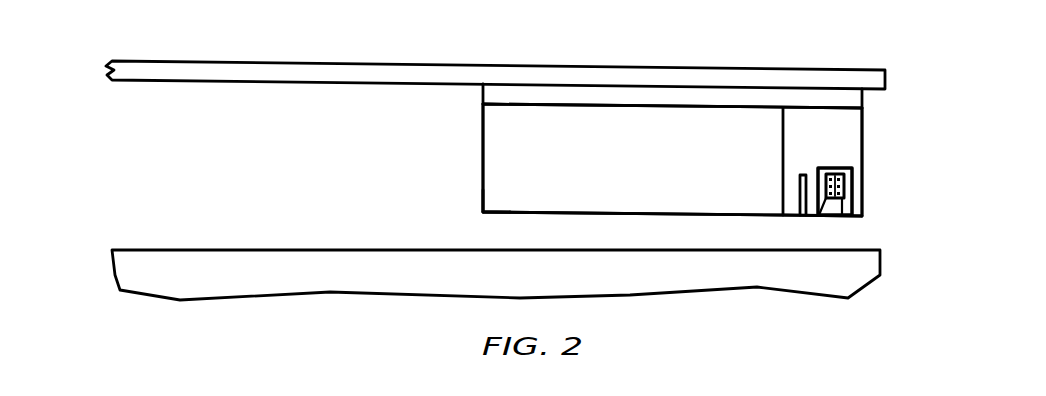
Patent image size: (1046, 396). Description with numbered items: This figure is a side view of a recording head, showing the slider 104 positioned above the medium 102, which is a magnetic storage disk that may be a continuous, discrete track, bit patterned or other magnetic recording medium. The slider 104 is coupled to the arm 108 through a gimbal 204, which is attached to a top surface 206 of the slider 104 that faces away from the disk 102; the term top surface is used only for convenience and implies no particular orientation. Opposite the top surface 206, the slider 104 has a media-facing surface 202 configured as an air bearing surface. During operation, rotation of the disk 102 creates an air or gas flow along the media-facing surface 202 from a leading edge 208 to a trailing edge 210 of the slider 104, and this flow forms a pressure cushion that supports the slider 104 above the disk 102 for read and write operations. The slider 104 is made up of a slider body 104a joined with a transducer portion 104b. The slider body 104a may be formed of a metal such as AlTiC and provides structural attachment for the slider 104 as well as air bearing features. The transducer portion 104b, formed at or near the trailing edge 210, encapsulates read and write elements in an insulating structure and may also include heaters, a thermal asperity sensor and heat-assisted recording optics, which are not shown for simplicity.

The medium 102 is at (112, 277).
The slider 104 is at (623, 125).
The slider body 104a is at (488, 203).
The transducer portion 104b is at (857, 198).
The arm 108 is at (242, 82).
The media-facing surface 202 is at (753, 216).
The gimbal 204 is at (745, 97).
The top surface 206 is at (705, 108).
The leading edge 208 is at (482, 175).
The trailing edge 210 is at (863, 152).